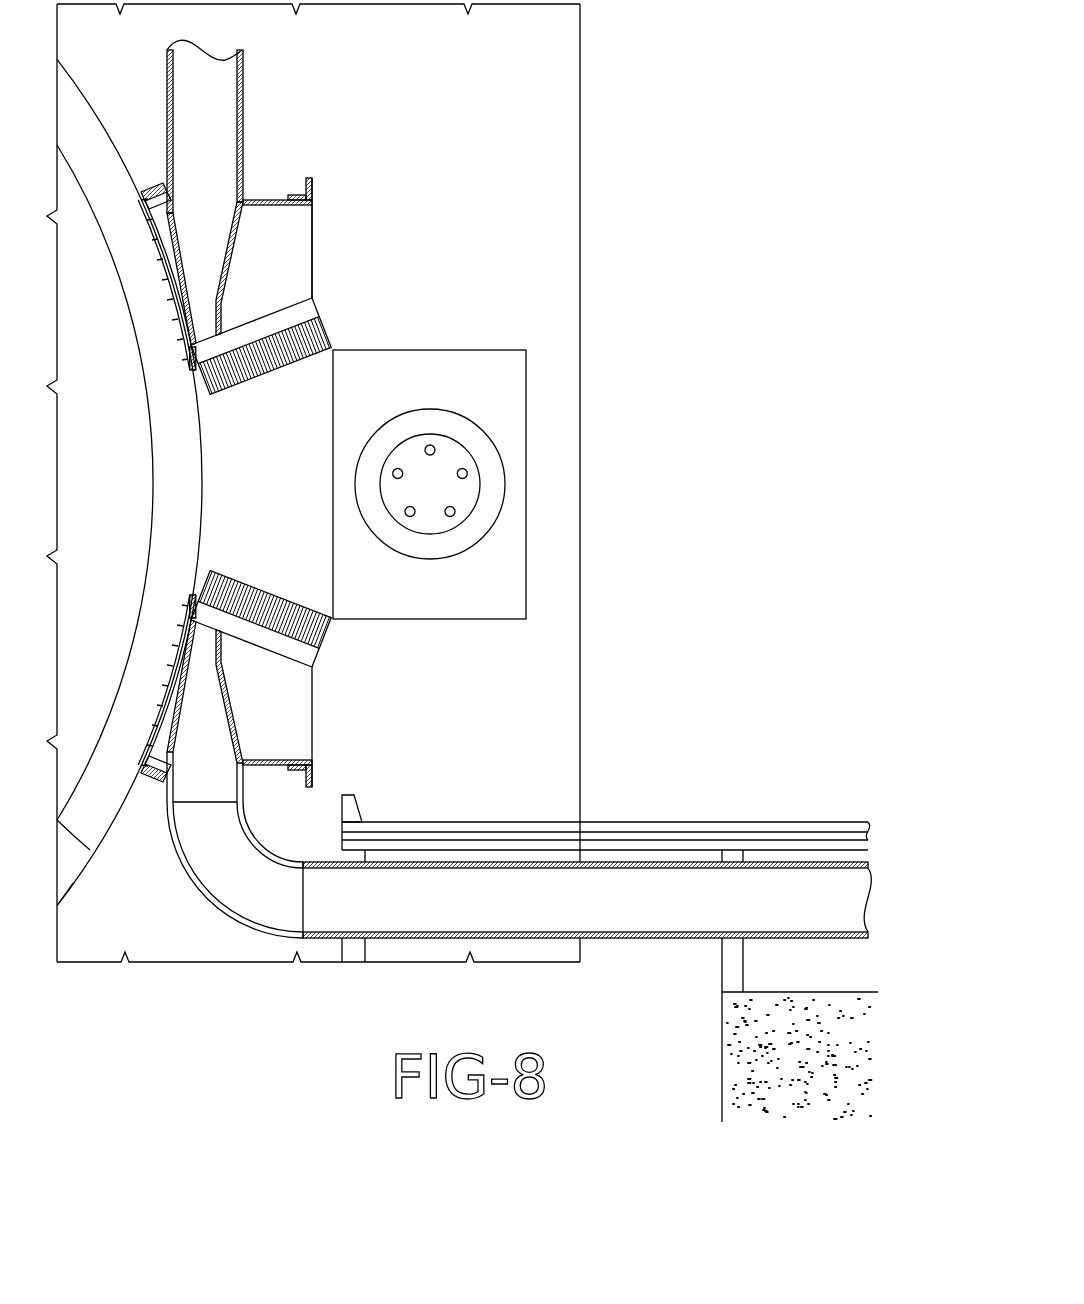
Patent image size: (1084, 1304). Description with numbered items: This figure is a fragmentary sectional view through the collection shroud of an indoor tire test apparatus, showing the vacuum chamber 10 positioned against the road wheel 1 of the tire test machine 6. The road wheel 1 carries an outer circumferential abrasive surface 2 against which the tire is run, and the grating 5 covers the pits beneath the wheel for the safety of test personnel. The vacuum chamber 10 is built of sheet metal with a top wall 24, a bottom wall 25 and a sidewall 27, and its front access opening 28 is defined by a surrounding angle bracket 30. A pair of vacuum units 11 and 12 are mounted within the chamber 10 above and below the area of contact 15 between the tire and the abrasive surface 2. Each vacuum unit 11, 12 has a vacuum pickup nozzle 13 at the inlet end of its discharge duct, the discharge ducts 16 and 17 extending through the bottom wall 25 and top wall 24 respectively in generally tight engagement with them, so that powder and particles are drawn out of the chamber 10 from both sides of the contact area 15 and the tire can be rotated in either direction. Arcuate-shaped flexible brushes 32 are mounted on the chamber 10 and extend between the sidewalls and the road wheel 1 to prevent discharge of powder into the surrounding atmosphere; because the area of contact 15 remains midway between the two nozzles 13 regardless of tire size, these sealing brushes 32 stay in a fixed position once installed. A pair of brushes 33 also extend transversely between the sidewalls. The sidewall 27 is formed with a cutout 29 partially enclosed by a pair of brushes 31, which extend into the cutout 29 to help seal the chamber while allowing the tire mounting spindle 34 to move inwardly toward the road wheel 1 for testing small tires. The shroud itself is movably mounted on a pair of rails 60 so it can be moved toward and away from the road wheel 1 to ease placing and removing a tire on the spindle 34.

The road wheel 1 is at (100, 862).
The outer circumferential abrasive surface 2 is at (75, 885).
The grating 5 is at (607, 833).
The tire test machine 6 is at (575, 108).
The vacuum chamber 10 is at (320, 248).
The vacuum unit 11 is at (185, 681).
The vacuum unit 12 is at (178, 279).
The vacuum pickup nozzle 13 is at (200, 332).
The area of contact 15 is at (192, 480).
The discharge duct 16 is at (236, 893).
The discharge duct 17 is at (243, 92).
The top wall 24 is at (268, 202).
The bottom wall 25 is at (276, 768).
The sidewall 27 is at (290, 282).
The front access opening 28 is at (296, 724).
The cutout 29 is at (296, 386).
The angle bracket 30 is at (313, 196).
The brush 31 is at (323, 323).
The arcuate-shaped flexible brush 32 is at (167, 258).
The brush 33 is at (157, 188).
The tire mounting spindle 34 is at (450, 455).
The rail 60 is at (744, 822).